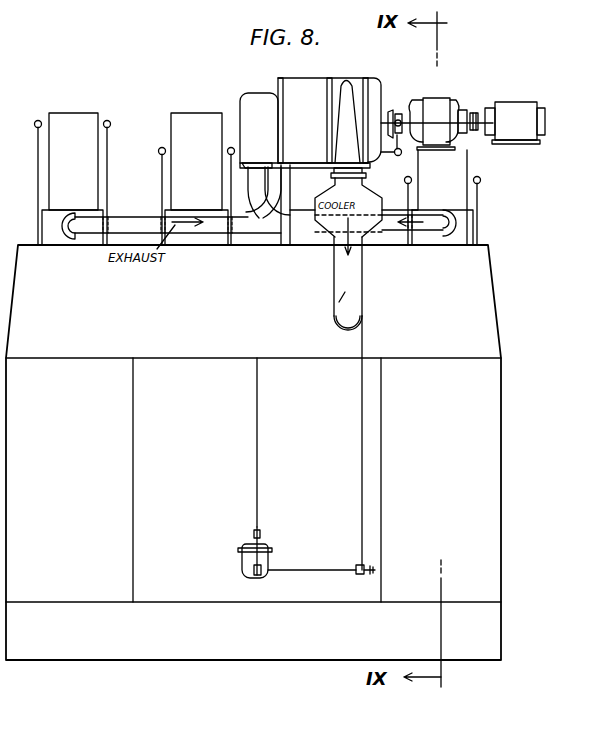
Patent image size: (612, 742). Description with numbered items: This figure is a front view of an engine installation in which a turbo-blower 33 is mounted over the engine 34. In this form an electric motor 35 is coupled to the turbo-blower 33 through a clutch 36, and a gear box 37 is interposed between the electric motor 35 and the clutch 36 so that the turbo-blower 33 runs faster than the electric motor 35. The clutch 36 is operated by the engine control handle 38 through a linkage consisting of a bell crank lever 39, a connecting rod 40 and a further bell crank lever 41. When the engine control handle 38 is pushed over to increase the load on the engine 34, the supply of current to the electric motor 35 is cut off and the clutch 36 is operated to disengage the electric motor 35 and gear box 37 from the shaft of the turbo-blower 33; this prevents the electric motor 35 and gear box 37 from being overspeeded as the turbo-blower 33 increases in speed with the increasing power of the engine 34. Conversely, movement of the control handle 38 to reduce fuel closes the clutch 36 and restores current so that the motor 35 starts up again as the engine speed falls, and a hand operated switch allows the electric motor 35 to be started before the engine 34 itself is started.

The turbo-blower 33 is at (305, 92).
The engine 34 is at (484, 412).
The electric motor 35 is at (507, 105).
The clutch 36 is at (392, 111).
The gear box 37 is at (436, 105).
The engine control handle 38 is at (270, 557).
The bell crank lever 39 is at (360, 576).
The connecting rod 40 is at (363, 465).
The bell crank lever 41 is at (388, 156).